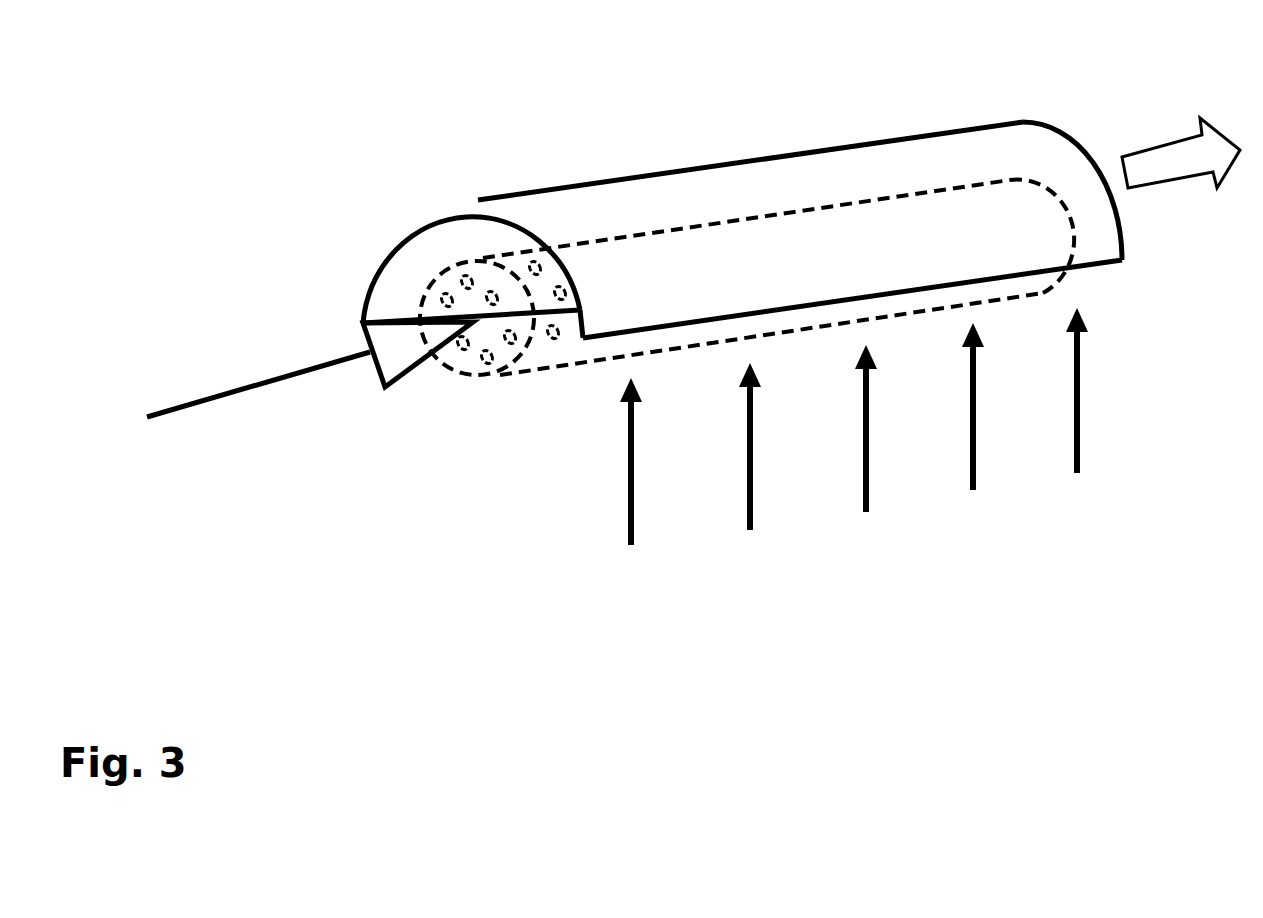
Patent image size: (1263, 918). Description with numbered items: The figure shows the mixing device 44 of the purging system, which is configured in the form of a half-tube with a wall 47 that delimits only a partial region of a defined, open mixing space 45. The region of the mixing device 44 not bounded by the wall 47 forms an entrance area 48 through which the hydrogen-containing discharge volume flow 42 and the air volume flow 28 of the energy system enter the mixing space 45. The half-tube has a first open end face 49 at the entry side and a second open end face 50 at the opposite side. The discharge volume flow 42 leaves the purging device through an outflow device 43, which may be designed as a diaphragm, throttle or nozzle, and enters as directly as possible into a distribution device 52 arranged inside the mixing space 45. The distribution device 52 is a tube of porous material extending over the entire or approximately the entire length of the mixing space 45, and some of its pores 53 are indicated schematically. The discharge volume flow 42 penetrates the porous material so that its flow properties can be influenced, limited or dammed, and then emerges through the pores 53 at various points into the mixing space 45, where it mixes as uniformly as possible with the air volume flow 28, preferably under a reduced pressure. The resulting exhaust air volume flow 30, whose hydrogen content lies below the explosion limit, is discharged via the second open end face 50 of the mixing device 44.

The air flow 28 is at (628, 493).
The exhaust air volume flow 30 is at (1168, 160).
The discharge volume flow 42 is at (225, 388).
The outflow device 43 is at (403, 345).
The mixing device 44 is at (742, 186).
The mixing space 45 is at (673, 325).
The wall 47 is at (730, 188).
The entrance area 48 is at (432, 250).
The first open end face 49 is at (471, 207).
The second open end face 50 is at (1052, 123).
The distribution device 52 is at (420, 362).
The pores 53 is at (445, 302).